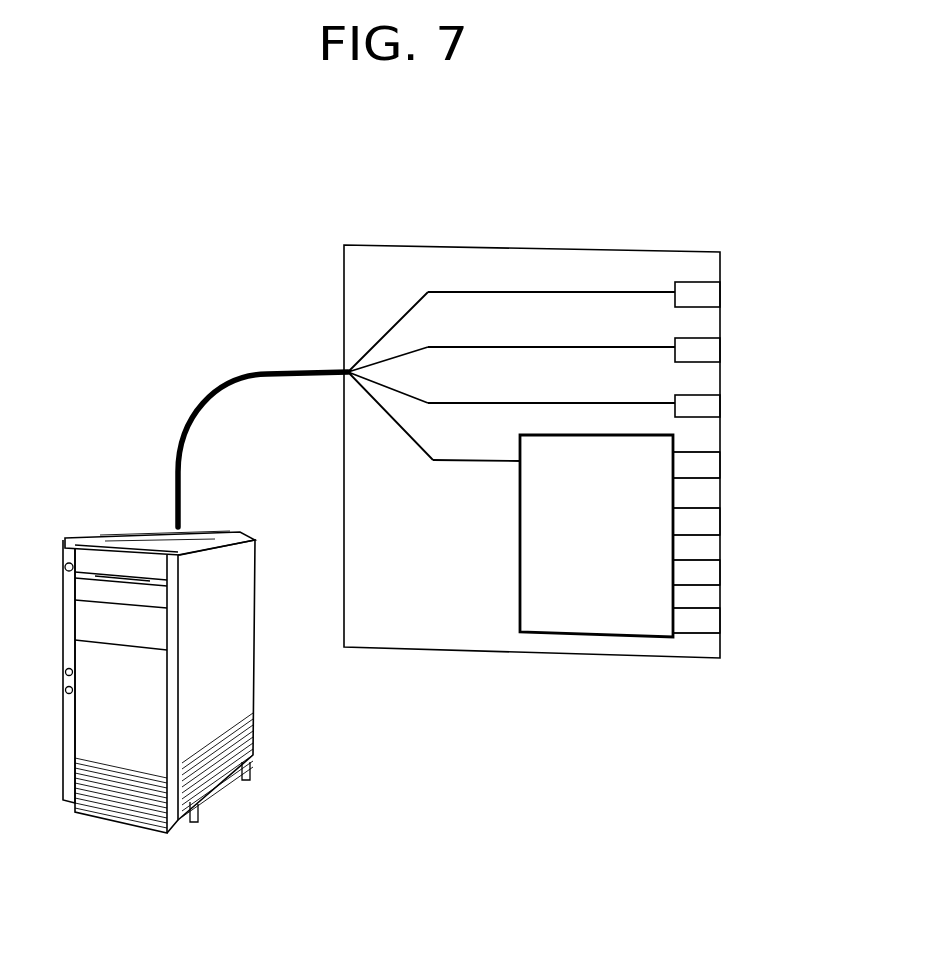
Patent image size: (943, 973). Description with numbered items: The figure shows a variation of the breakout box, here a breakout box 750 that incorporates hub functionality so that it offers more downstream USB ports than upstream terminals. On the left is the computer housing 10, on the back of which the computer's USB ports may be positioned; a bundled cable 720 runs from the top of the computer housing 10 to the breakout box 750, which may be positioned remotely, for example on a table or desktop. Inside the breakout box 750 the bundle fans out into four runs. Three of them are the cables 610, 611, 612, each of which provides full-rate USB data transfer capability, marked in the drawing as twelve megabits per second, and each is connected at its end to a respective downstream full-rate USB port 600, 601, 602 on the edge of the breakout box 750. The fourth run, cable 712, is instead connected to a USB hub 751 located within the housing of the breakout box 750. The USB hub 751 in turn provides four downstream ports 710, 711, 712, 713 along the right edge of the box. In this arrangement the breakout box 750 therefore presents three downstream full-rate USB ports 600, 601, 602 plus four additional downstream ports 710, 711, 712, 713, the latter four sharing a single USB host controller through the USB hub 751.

The computer housing 10 is at (243, 628).
The cable 720 is at (207, 412).
The breakout box 750 is at (530, 240).
The USB hub 751 is at (517, 527).
The USB port 600 is at (733, 292).
The USB port 601 is at (733, 348).
The USB port 602 is at (733, 392).
The cable 610 is at (440, 290).
The cable 611 is at (437, 347).
The cable 612 is at (437, 403).
The downstream port 710 is at (722, 465).
The downstream port 711 is at (722, 520).
The cable 712 is at (440, 460).
The downstream port 713 is at (722, 622).